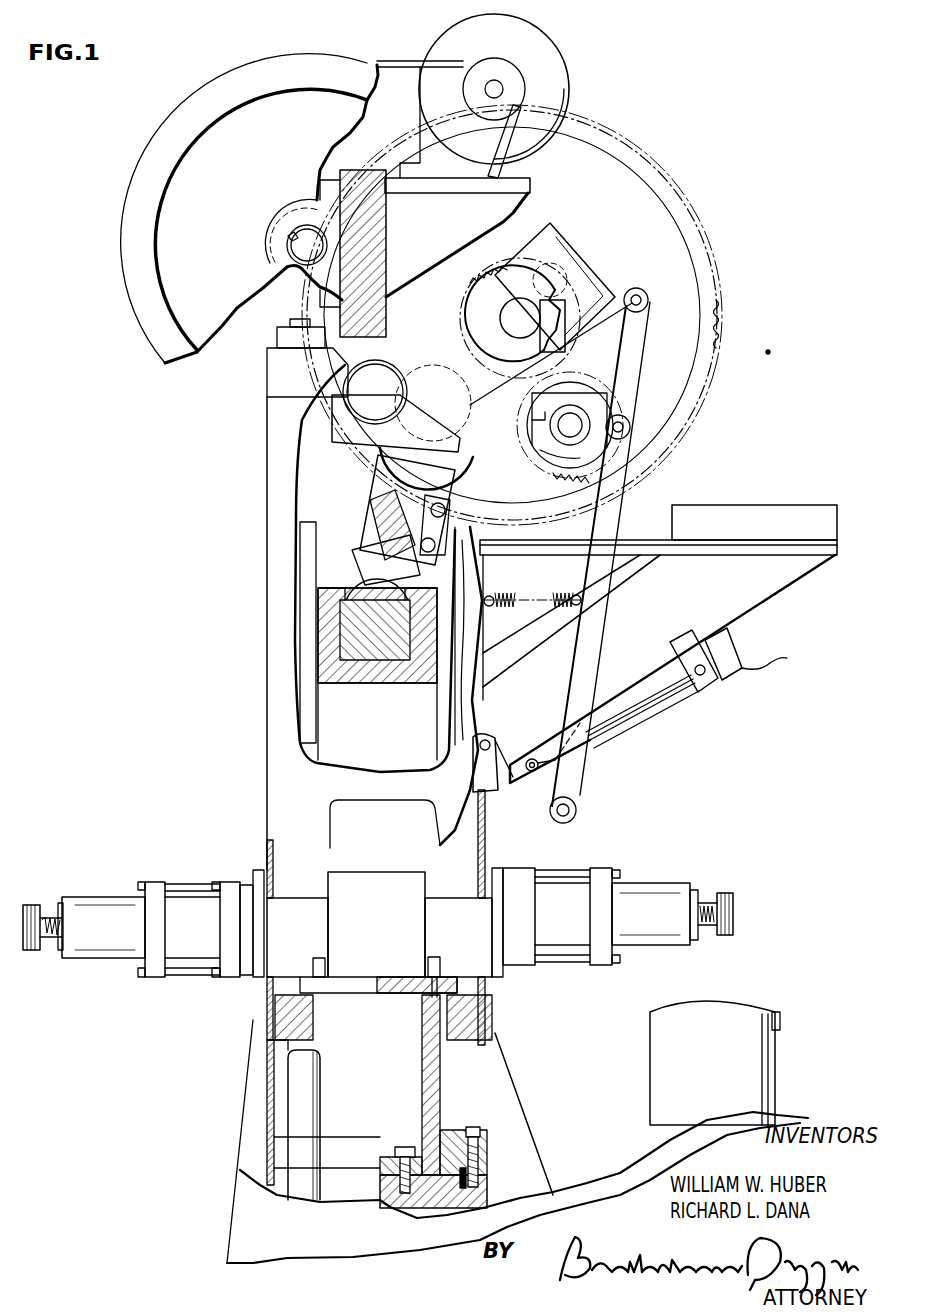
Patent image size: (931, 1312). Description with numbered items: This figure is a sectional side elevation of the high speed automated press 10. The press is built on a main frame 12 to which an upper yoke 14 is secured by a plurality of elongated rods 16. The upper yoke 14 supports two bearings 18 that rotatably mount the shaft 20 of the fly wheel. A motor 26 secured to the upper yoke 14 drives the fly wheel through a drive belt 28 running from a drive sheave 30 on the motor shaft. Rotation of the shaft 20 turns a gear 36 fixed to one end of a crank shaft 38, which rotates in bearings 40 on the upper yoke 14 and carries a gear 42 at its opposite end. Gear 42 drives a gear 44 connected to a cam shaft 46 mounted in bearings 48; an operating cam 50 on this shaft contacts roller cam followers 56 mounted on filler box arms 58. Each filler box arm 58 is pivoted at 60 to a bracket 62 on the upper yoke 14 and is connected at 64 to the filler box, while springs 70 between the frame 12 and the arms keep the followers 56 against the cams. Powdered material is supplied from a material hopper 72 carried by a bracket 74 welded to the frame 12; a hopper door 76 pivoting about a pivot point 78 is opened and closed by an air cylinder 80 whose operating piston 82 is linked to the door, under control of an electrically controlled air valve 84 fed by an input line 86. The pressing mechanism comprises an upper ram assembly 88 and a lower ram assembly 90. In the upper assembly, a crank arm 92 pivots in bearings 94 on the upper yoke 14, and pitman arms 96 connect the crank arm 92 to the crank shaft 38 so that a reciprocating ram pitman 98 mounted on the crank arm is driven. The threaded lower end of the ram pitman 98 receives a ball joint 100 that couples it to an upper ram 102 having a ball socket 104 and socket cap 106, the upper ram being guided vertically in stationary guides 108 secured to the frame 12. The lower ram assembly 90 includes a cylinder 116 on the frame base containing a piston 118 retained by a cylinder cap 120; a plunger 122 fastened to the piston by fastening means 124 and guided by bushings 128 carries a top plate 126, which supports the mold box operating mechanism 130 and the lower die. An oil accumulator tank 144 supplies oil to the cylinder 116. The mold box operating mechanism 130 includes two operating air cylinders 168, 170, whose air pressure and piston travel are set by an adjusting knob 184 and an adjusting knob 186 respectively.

The automated press 10 is at (193, 1188).
The main frame 12 is at (303, 549).
The upper yoke 14 is at (375, 245).
The elongated rods 16 is at (323, 1120).
The bearings 18 is at (307, 231).
The shaft 20 is at (291, 248).
The motor 26 is at (494, 89).
The drive belt 28 is at (395, 62).
The drive sheave 30 is at (508, 90).
The gear 36 is at (665, 182).
The crank shaft 38 is at (512, 313).
The bearings 40 is at (551, 307).
The gear 42 is at (468, 288).
The gear 44 is at (557, 478).
The cam shaft 46 is at (572, 412).
The bearings 48 is at (569, 419).
The operating cam 50 is at (546, 452).
The roller cam followers 56 is at (630, 430).
The filler box arms 58 is at (604, 522).
The pivot 60 is at (647, 298).
The brackets 62 is at (554, 354).
The connection 64 is at (576, 815).
The springs 70 is at (518, 596).
The material hopper 72 is at (659, 669).
The bracket 74 is at (568, 555).
The hopper door 76 is at (490, 788).
The pivot point 78 is at (490, 744).
The air cylinder 80 is at (672, 705).
The operating piston 82 is at (565, 770).
The electrically controlled air valve 84 is at (735, 676).
The input line 86 is at (770, 660).
The upper ram assembly 88 is at (244, 495).
The lower ram assembly 90 is at (503, 1002).
The crank arm 92 is at (407, 400).
The bearings 94 is at (340, 430).
The pitman arms 96 is at (571, 278).
The ram pitman 98 is at (403, 520).
The ball joint 100 is at (377, 612).
The upper ram 102 is at (370, 683).
The ball socket 104 is at (402, 683).
The socket cap 106 is at (340, 583).
The stationary guides 108 is at (316, 760).
The cylinder 116 is at (480, 1197).
The piston 118 is at (462, 1176).
The cylinder cap 120 is at (455, 1137).
The plunger 122 is at (420, 1075).
The fastening means 124 is at (410, 1145).
The top plate 126 is at (362, 982).
The bushings 128 is at (443, 1040).
The mold box operating mechanism 130 is at (379, 924).
The oil accumulator tank 144 is at (655, 1024).
The operating air cylinder 168 is at (634, 890).
The operating air cylinder 170 is at (212, 890).
The adjusting knob 184 is at (730, 917).
The adjusting knob 186 is at (36, 915).